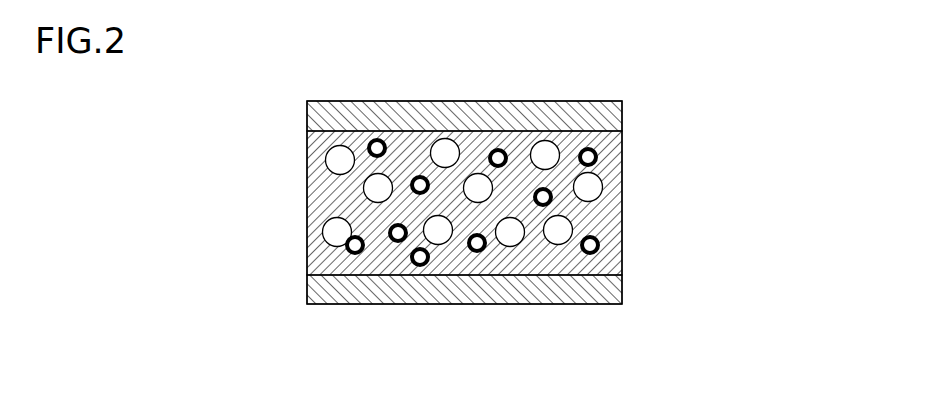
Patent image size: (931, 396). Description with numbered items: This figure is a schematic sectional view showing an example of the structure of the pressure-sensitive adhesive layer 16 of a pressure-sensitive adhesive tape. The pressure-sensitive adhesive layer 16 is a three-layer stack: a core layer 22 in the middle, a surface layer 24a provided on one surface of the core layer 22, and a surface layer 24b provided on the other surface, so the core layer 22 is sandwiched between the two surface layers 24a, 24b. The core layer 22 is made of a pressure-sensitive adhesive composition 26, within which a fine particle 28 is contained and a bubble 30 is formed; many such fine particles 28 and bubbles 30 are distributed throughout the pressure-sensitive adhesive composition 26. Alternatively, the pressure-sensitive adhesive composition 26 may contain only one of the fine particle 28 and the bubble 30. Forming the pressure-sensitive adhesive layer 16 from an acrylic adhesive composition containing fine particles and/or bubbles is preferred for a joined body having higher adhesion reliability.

The pressure-sensitive adhesive layer 16 is at (495, 353).
The core layer 22 is at (622, 153).
The surface layer 24a is at (622, 290).
The surface layer 24b is at (622, 118).
The pressure-sensitive adhesive composition 26 is at (622, 200).
The fine particle 28 is at (622, 176).
The bubble 30 is at (622, 233).